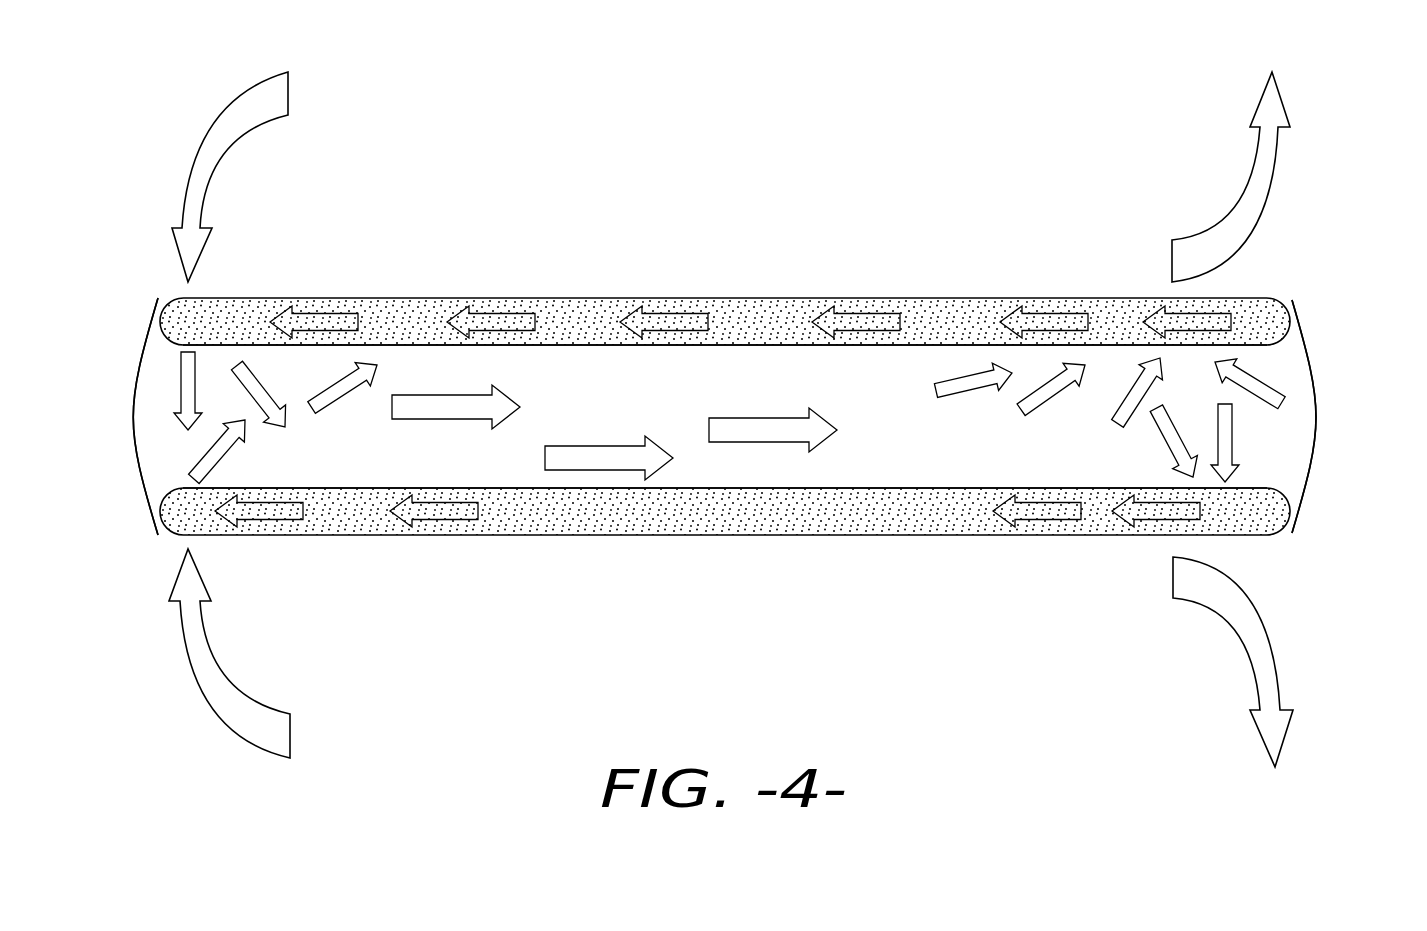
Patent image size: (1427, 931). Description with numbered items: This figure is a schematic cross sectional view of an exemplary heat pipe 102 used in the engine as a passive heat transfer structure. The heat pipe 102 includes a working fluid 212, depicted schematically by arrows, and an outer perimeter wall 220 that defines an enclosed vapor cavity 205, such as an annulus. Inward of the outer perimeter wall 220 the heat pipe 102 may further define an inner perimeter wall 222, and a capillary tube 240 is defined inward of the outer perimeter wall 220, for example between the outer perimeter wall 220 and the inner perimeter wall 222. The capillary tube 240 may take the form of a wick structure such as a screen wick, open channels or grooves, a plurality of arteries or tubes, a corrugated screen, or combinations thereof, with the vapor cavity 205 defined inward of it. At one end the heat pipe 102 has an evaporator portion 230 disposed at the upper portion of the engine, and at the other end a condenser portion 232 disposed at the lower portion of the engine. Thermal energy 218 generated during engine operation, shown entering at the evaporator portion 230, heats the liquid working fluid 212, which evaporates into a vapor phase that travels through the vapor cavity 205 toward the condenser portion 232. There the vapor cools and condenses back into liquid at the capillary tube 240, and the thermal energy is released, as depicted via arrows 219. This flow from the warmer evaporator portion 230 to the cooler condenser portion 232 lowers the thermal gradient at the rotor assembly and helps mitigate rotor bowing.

The heat pipe 102 is at (883, 242).
The vapor cavity 205 is at (927, 456).
The working fluid 212 is at (313, 317).
The thermal energy 218 is at (192, 157).
The released thermal energy 219 is at (1268, 200).
The outer perimeter wall 220 is at (405, 300).
The inner perimeter wall 222 is at (802, 345).
The evaporator portion 230 is at (130, 489).
The condenser portion 232 is at (1316, 492).
The capillary tube 240 is at (755, 318).